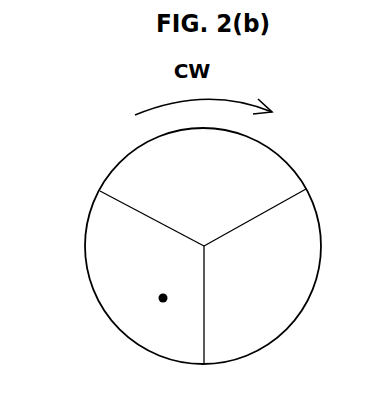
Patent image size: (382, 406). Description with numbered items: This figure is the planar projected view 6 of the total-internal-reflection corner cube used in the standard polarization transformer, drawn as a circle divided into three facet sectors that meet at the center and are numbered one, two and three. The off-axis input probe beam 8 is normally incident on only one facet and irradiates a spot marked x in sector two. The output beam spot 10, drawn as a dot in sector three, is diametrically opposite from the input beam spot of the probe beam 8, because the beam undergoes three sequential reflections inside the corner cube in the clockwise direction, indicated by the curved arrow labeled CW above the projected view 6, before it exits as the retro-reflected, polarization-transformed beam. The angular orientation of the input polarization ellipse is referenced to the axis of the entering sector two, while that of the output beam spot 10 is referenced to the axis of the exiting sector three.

The planar projected view 6 is at (86, 264).
The off-axis input probe beam 8 is at (252, 185).
The output beam spot 10 is at (163, 298).